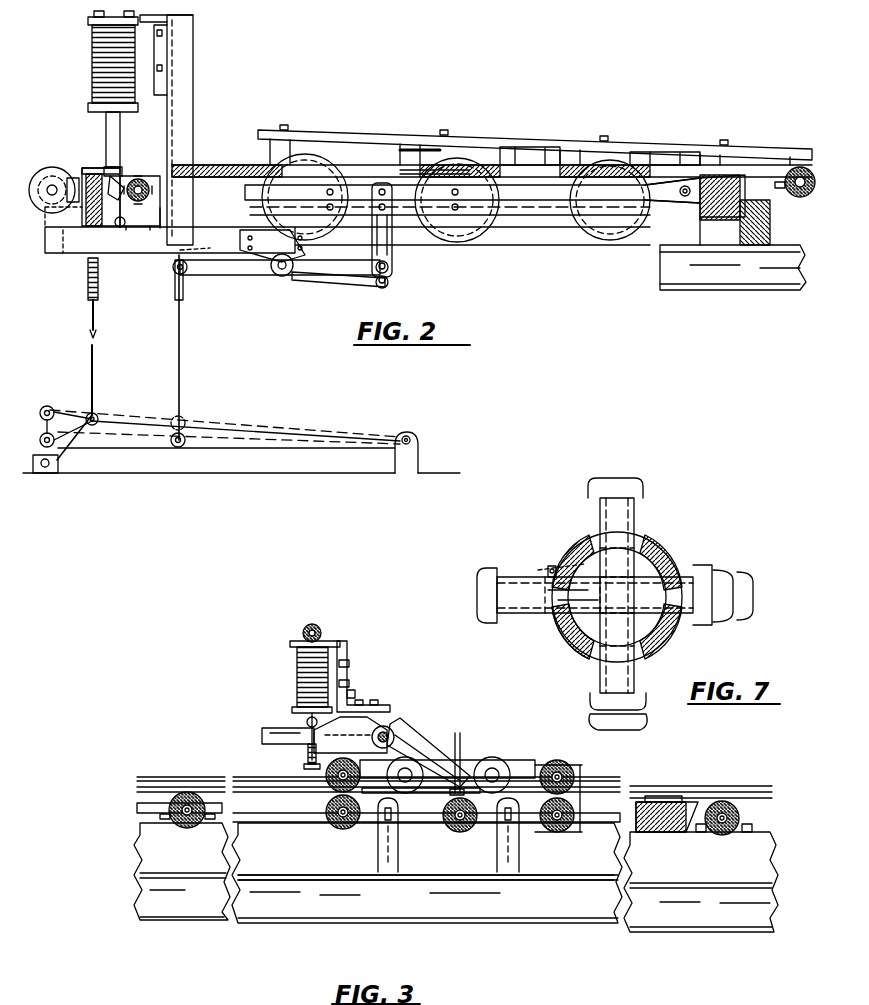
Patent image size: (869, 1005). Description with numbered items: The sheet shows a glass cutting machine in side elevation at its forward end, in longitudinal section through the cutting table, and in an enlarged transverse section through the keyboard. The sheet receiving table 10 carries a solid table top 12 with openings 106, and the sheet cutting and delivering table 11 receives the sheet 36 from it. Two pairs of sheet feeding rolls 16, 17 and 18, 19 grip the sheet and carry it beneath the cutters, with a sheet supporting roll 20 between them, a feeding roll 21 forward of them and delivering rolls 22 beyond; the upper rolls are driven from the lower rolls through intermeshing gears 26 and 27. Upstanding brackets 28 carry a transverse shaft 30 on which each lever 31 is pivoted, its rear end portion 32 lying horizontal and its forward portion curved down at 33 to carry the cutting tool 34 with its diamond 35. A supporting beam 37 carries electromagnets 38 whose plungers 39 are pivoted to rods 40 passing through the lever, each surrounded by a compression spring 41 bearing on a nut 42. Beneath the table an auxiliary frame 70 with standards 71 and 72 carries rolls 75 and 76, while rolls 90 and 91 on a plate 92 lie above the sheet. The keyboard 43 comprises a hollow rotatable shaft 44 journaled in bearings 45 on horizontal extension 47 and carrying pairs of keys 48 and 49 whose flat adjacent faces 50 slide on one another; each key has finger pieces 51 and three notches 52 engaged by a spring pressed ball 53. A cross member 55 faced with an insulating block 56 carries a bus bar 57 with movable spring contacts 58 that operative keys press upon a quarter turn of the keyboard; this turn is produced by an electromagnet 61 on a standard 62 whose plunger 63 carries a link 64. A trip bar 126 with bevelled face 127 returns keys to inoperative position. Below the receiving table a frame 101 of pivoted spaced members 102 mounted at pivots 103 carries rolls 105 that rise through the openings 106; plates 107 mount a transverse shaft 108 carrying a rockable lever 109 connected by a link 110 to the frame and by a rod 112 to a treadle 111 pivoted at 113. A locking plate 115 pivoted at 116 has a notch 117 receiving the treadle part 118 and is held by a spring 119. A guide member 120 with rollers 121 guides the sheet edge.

In FIG. 2, the sheet receiving table 10 is at (392, 160).
In FIG. 2, the sheet cutting and delivering table 11 is at (783, 281).
In FIG. 2, the table top 12 is at (215, 167).
In FIG. 3, the sheet feeding roll 16 is at (326, 790).
In FIG. 3, the sheet feeding roll 17 is at (335, 826).
In FIG. 3, the sheet feeding roll 18 is at (580, 784).
In FIG. 3, the sheet feeding roll 19 is at (565, 832).
In FIG. 3, the sheet supporting roll 20 is at (455, 830).
In FIG. 2, the sheet feeding roll 21 is at (802, 167).
In FIG. 3, the sheet feeding roll 21 is at (168, 824).
In FIG. 3, the delivering roll 22 is at (746, 802).
In FIG. 3, the intermeshing gear 26 is at (392, 728).
In FIG. 3, the intermeshing gear 27 is at (566, 753).
In FIG. 3, the upstanding bracket 28 is at (447, 714).
In FIG. 3, the transverse shaft 30 is at (405, 727).
In FIG. 3, the lever 31 is at (414, 727).
In FIG. 3, the rear end portion 32 is at (265, 731).
In FIG. 3, the downwardly curved forward end portion 33 is at (450, 740).
In FIG. 3, the cutting tool 34 is at (425, 770).
In FIG. 3, the cutting diamond 35 is at (502, 766).
In FIG. 2, the sheet 36 is at (530, 152).
In FIG. 3, the sheet 36 is at (213, 783).
In FIG. 3, the supporting beam 37 is at (368, 705).
In FIG. 3, the electromagnet 38 is at (295, 663).
In FIG. 3, the reciprocating plunger 39 is at (310, 718).
In FIG. 3, the rod 40 is at (300, 744).
In FIG. 3, the compression spring 41 is at (305, 757).
In FIG. 3, the nut 42 is at (355, 690).
In FIG. 2, the keyboard 43 is at (142, 180).
In FIG. 2, the hollow rotatable shaft 44 is at (130, 215).
In FIG. 7, the hollow rotatable shaft 44 is at (700, 548).
In FIG. 2, the bearing 45 is at (152, 228).
In FIG. 2, the horizontal extension 47 is at (160, 242).
In FIG. 7, the key 48 is at (543, 607).
In FIG. 7, the key 49 is at (614, 532).
In FIG. 7, the adjacent face 50 is at (573, 632).
In FIG. 7, the finger piece 51 is at (618, 490).
In FIG. 7, the notch 52 is at (546, 568).
In FIG. 7, the spring pressed ball 53 is at (550, 566).
In FIG. 2, the cross member 55 is at (80, 176).
In FIG. 2, the insulating block 56 is at (102, 222).
In FIG. 2, the bus bar 57 is at (90, 220).
In FIG. 2, the movable spring contact 58 is at (122, 180).
In FIG. 2, the electromagnet 61 is at (98, 71).
In FIG. 2, the standard 62 is at (181, 111).
In FIG. 2, the plunger 63 is at (106, 132).
In FIG. 2, the link 64 is at (121, 170).
In FIG. 3, the auxiliary frame 70 is at (462, 915).
In FIG. 3, the standard 71 is at (388, 872).
In FIG. 3, the standard 72 is at (510, 874).
In FIG. 3, the roll 75 is at (376, 830).
In FIG. 3, the roll 76 is at (498, 830).
In FIG. 3, the roll 90 is at (435, 802).
In FIG. 3, the roll 91 is at (510, 776).
In FIG. 3, the plate 92 is at (456, 762).
In FIG. 2, the frame 101 is at (350, 192).
In FIG. 2, the spaced member 102 is at (608, 212).
In FIG. 2, the pivot 103 is at (688, 202).
In FIG. 2, the roll 105 is at (468, 222).
In FIG. 2, the opening 106 is at (425, 170).
In FIG. 2, the plate 107 is at (270, 274).
In FIG. 2, the transverse shaft 108 is at (300, 277).
In FIG. 2, the rockable lever 109 is at (225, 274).
In FIG. 2, the link 110 is at (392, 252).
In FIG. 2, the treadle 111 is at (148, 456).
In FIG. 2, the rod 112 is at (181, 390).
In FIG. 2, the pivot 113 is at (430, 414).
In FIG. 2, the locking plate 115 is at (92, 440).
In FIG. 2, the pivot 116 is at (52, 476).
In FIG. 2, the notch 117 is at (56, 440).
In FIG. 2, the treadle part 118 is at (24, 430).
In FIG. 2, the spring 119 is at (88, 291).
In FIG. 2, the guide member 120 is at (622, 148).
In FIG. 2, the roller 121 is at (614, 133).
In FIG. 2, the trip bar 126 is at (95, 172).
In FIG. 2, the bevelled face 127 is at (100, 172).